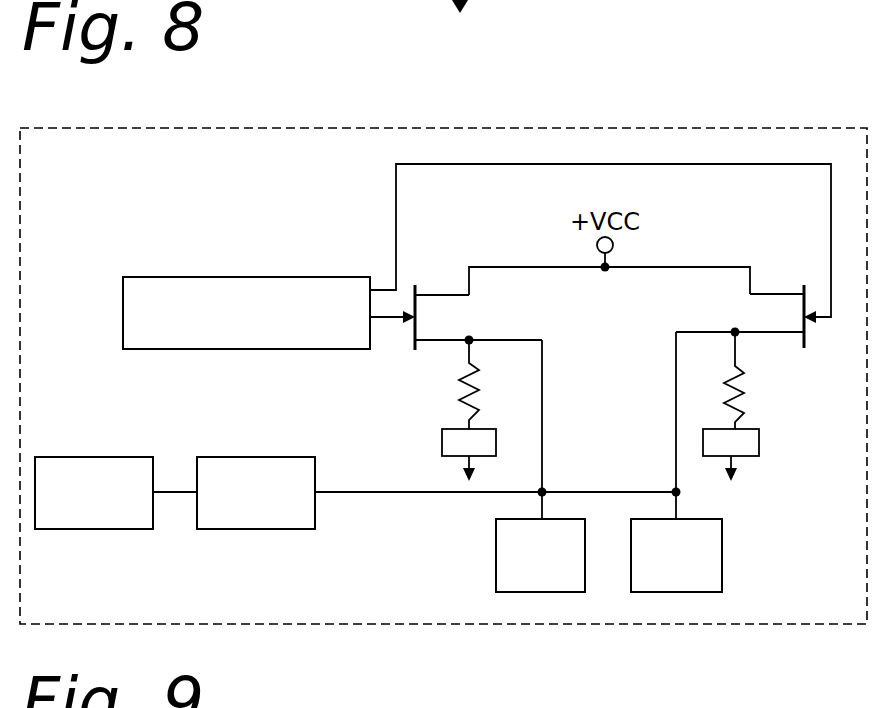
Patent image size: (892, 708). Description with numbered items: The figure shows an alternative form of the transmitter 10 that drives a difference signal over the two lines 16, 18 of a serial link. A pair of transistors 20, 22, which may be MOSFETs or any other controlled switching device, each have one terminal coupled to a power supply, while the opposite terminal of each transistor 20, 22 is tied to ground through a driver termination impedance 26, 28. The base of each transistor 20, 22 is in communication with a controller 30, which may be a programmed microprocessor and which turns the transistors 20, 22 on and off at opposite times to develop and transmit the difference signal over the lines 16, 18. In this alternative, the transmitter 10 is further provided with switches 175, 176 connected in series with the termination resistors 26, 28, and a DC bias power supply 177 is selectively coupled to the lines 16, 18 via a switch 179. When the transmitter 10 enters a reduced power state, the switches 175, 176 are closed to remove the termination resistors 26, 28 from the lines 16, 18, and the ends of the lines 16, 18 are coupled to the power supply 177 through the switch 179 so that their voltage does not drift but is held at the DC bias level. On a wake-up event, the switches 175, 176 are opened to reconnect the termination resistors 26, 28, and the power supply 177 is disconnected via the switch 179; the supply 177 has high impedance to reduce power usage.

The transmitter 10 is at (782, 627).
The controller 30 is at (218, 277).
The transistor 20 is at (412, 300).
The transistor 22 is at (810, 298).
The driver termination impedance 26 is at (462, 390).
The driver termination impedance 28 is at (740, 376).
The switch 175 is at (442, 447).
The switch 176 is at (757, 432).
The line 16 is at (496, 551).
The line 18 is at (722, 560).
The power supply 177 is at (52, 457).
The switch 179 is at (208, 457).